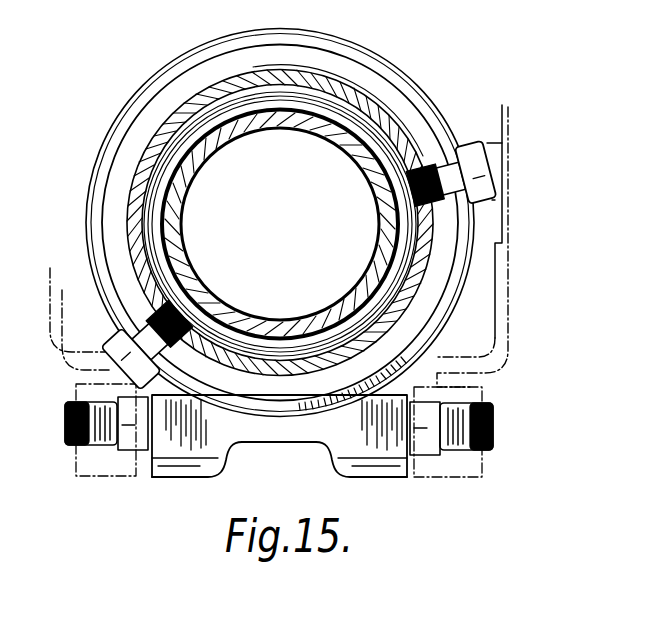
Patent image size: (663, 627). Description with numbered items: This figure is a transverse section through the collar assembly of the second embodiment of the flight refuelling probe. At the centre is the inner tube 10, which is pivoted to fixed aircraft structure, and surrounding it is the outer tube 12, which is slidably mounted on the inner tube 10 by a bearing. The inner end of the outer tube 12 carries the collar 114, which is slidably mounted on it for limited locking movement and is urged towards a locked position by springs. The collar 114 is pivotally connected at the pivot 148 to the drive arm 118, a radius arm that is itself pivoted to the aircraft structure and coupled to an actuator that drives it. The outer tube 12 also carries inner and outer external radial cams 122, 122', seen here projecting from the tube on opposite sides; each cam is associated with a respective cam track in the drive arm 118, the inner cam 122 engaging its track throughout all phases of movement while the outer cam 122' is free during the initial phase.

The inner tube 10 is at (187, 170).
The outer tube 12 is at (132, 215).
The collar 114 is at (128, 92).
The drive arm 118 is at (503, 253).
The inner external radial cam 122 is at (453, 142).
The outer external radial cam 122' is at (101, 345).
The pivotal connection 148 is at (493, 418).